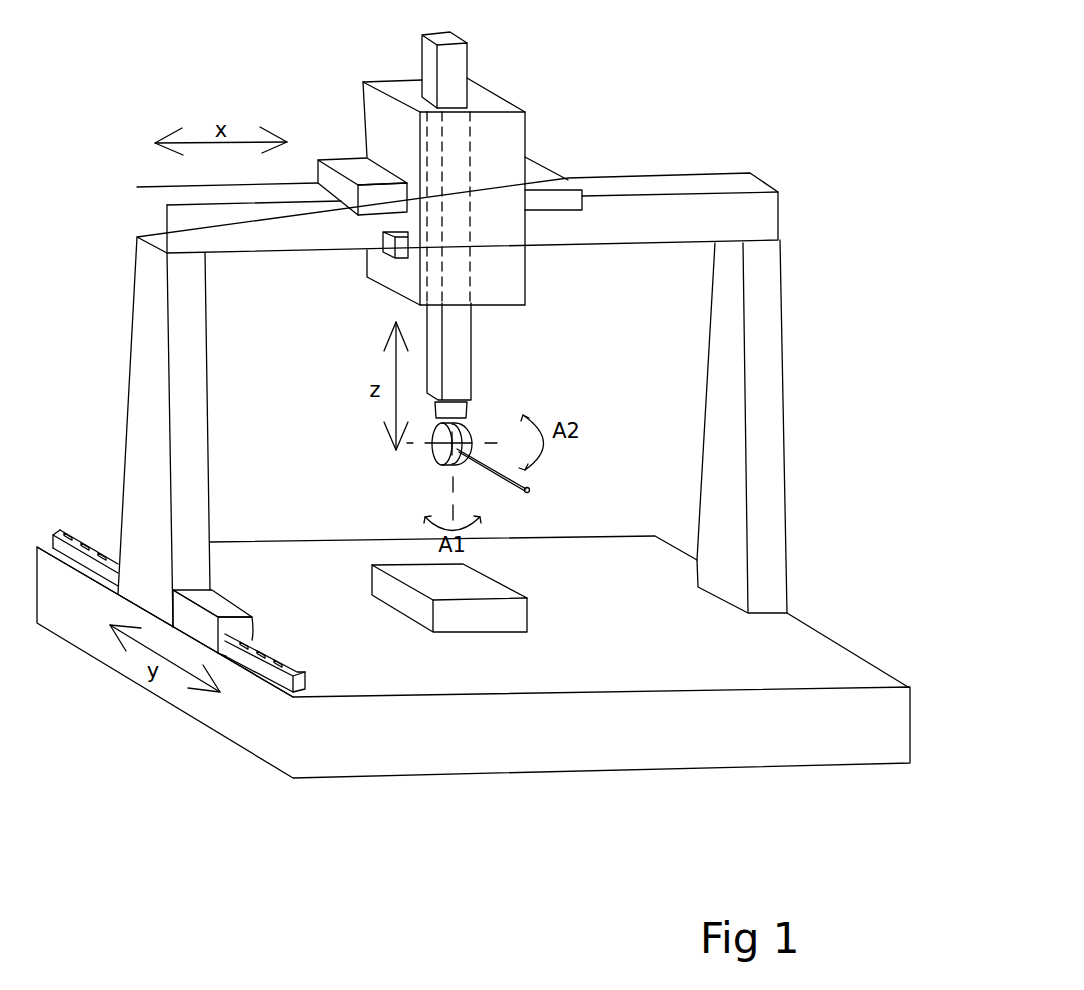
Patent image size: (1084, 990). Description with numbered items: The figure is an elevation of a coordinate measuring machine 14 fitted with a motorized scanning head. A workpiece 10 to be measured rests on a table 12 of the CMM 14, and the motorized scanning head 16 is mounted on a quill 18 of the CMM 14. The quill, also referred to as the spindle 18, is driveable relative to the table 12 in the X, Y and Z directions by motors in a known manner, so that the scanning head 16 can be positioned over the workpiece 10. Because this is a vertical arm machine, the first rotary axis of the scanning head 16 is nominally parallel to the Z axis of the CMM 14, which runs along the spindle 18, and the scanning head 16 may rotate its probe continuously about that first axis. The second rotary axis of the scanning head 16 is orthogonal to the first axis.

The workpiece 10 is at (515, 618).
The table 12 is at (500, 735).
The coordinate measuring machine 14 is at (707, 108).
The motorized scanning head 16 is at (423, 470).
The quill 18 is at (453, 353).